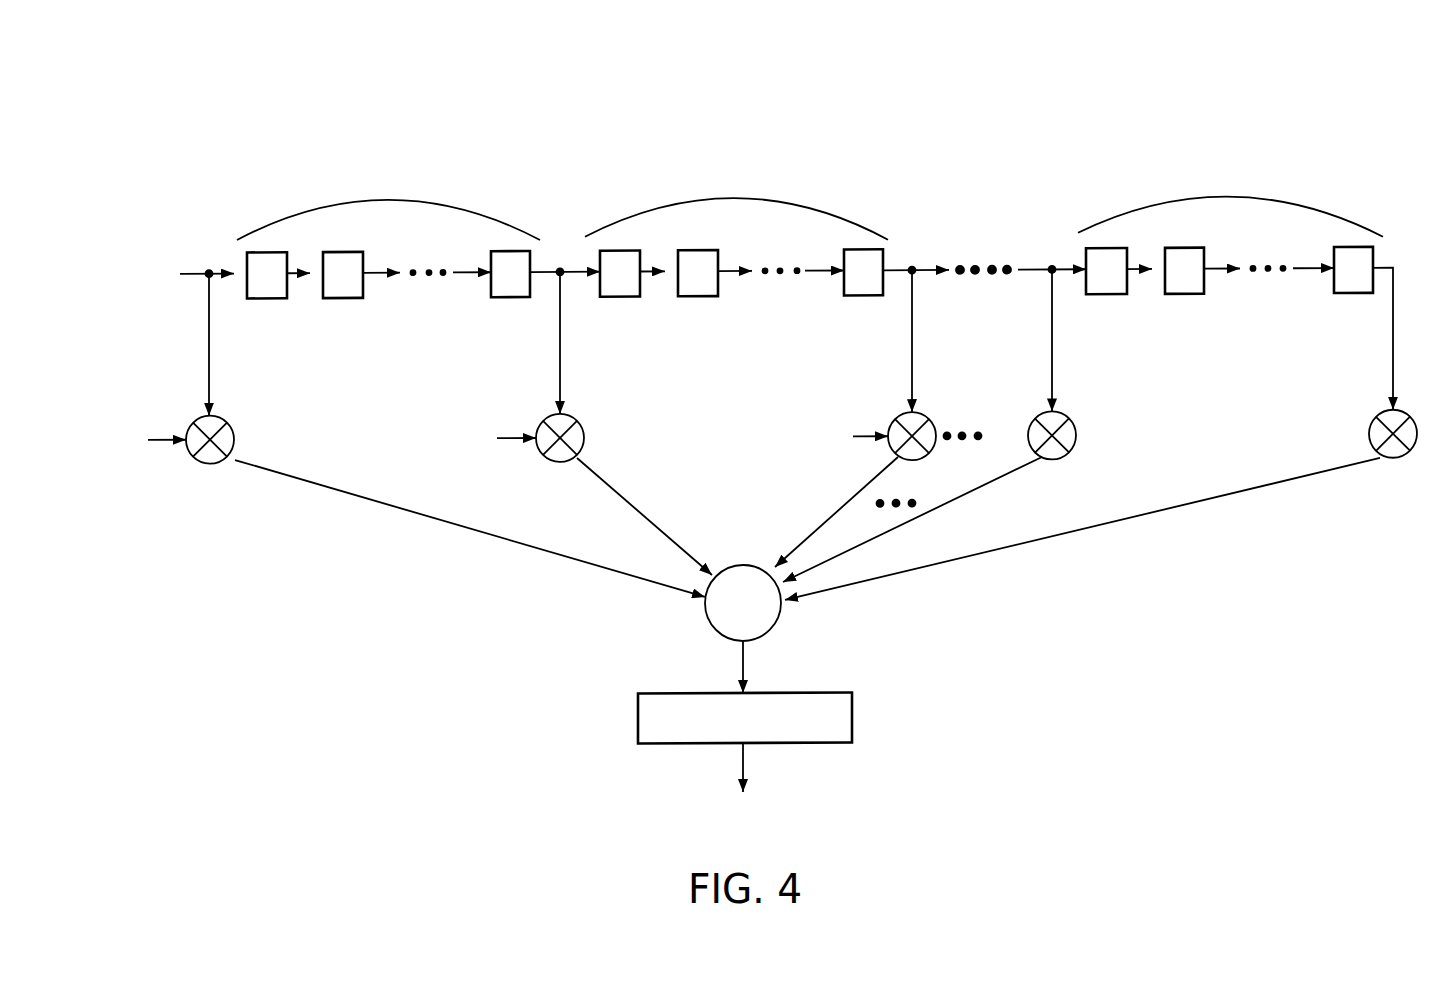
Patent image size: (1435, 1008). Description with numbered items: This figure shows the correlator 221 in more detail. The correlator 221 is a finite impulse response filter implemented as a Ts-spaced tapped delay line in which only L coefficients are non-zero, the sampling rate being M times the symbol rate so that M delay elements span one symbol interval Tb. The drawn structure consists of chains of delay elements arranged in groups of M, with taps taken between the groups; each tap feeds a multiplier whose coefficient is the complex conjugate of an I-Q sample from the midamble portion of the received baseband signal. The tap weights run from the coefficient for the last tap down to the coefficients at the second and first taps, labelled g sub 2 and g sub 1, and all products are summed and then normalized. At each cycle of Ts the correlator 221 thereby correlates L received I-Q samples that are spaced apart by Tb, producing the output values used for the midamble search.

The correlator 221 is at (1212, 114).
The tap weight multiplier g2 2 is at (1028, 437).
The tap weight multiplier g1 1 is at (1369, 437).